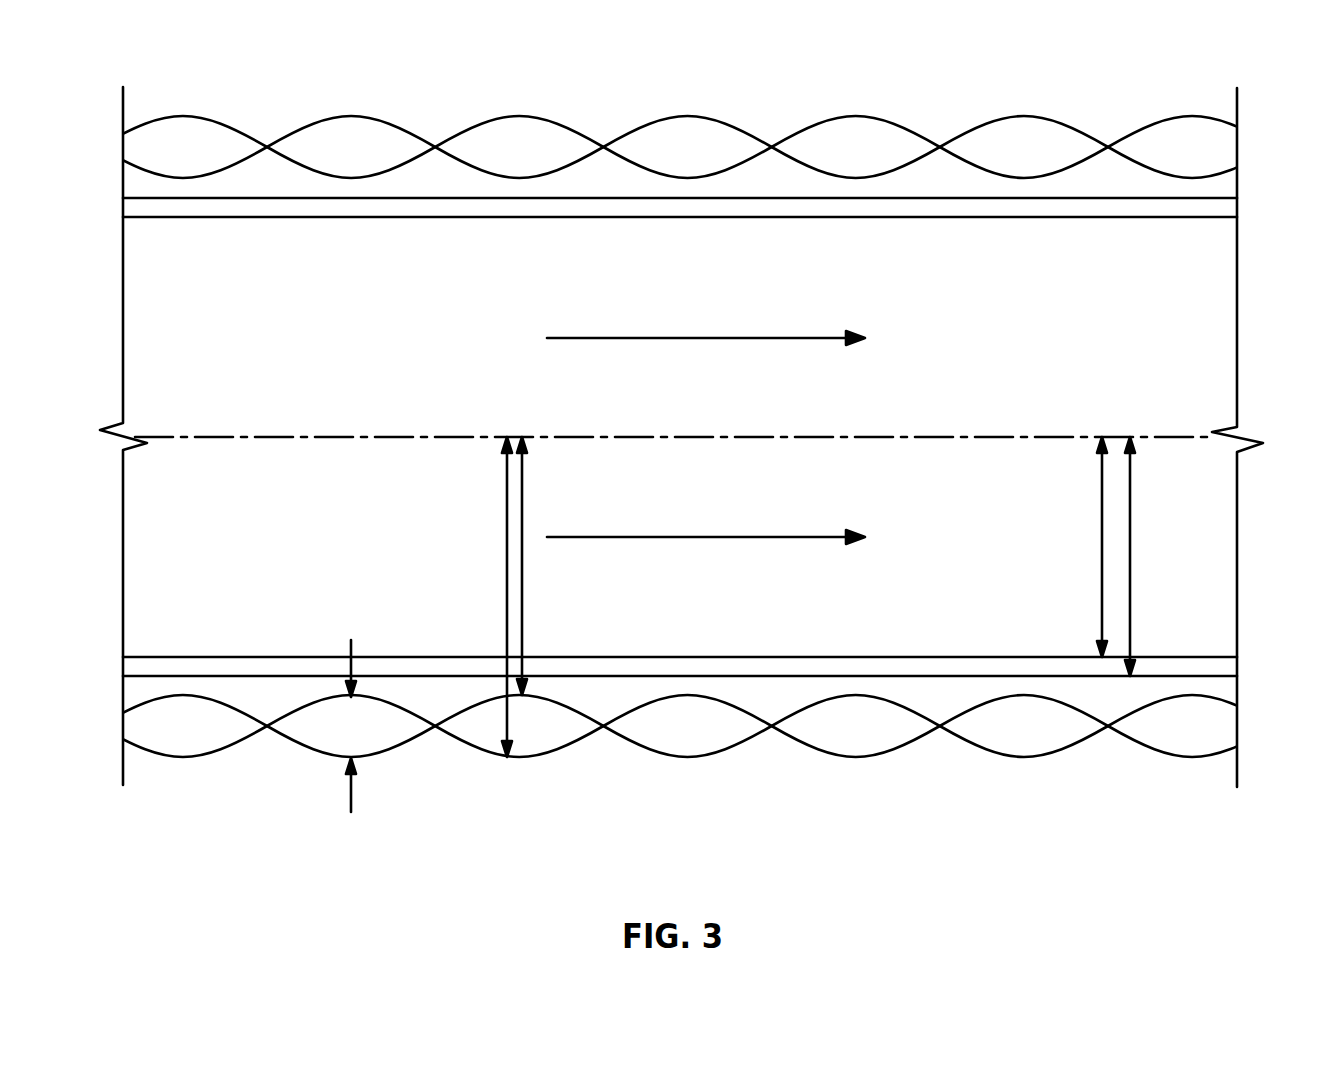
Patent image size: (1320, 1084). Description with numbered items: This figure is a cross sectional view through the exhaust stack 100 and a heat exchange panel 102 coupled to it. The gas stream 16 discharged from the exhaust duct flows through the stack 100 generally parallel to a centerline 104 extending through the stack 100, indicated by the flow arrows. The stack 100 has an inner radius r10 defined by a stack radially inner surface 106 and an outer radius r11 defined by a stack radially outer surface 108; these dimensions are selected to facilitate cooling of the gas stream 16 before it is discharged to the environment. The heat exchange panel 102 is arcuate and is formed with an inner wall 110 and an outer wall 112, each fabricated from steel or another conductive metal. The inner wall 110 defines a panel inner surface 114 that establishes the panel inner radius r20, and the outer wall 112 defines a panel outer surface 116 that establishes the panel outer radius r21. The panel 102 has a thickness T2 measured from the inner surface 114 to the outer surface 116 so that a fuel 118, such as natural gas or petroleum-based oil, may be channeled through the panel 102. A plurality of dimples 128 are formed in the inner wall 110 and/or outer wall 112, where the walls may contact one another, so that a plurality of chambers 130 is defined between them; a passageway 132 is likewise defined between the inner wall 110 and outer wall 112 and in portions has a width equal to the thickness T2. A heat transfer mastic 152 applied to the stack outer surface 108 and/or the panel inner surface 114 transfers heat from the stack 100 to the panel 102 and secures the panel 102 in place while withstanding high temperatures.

The gas stream 16 is at (713, 337).
The exhaust stack 100 is at (278, 665).
The heat exchange panel 102 is at (318, 743).
The centerline 104 is at (763, 437).
The stack radially inner surface 106 is at (255, 220).
The stack radially outer surface 108 is at (1227, 198).
The inner wall 110 is at (1022, 693).
The outer wall 112 is at (855, 758).
The panel inner surface 114 is at (972, 703).
The panel outer surface 116 is at (810, 752).
The fuel 118 is at (855, 148).
The dimple 128 is at (604, 142).
The chamber 130 is at (688, 148).
The passageway 132 is at (1023, 148).
The heat transfer mastic 152 is at (585, 192).
The outer radius r21 is at (507, 510).
The inner radius r20 is at (522, 465).
The inner radius r10 is at (1102, 510).
The outer radius r11 is at (1130, 542).
The thickness T2 is at (353, 737).